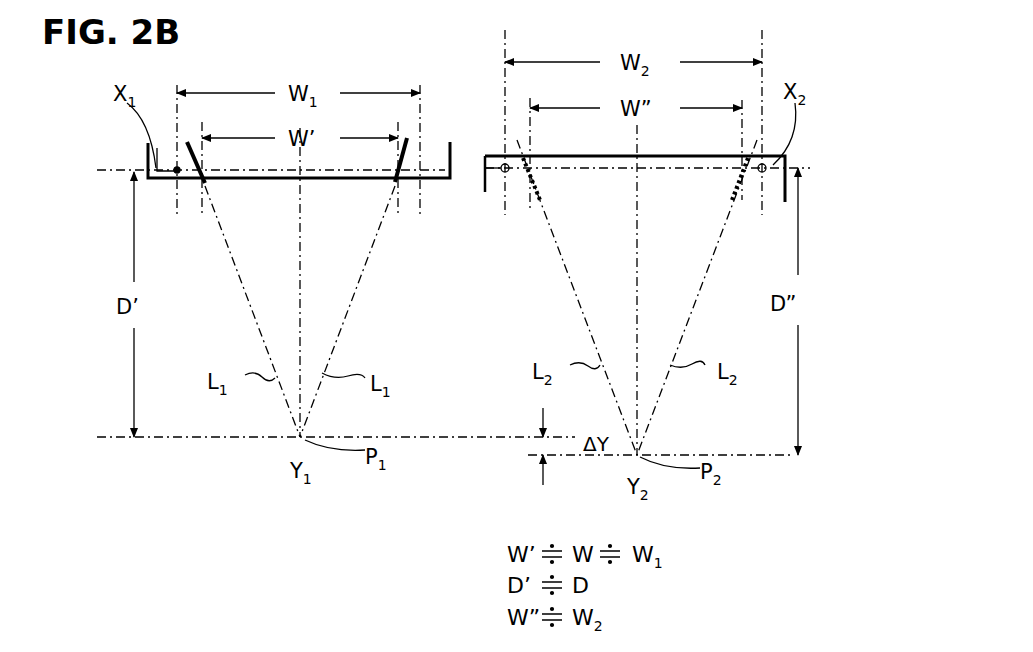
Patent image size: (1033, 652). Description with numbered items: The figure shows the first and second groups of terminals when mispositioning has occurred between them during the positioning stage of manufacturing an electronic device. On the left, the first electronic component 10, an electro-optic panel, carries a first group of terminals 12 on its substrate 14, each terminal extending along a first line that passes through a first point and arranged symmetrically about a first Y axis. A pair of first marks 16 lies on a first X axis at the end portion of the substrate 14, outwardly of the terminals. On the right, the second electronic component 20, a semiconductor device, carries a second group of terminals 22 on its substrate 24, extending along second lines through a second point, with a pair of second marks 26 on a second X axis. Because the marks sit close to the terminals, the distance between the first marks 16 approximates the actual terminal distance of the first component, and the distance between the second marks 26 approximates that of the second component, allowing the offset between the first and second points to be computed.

The first electronic component 10 is at (450, 160).
The first group of terminals 12 is at (406, 190).
The substrate 14 is at (437, 183).
The first marks 16 is at (175, 169).
The second electronic component 20 is at (487, 190).
The second group of terminals 22 is at (518, 188).
The substrate 24 is at (483, 182).
The second marks 26 is at (500, 160).